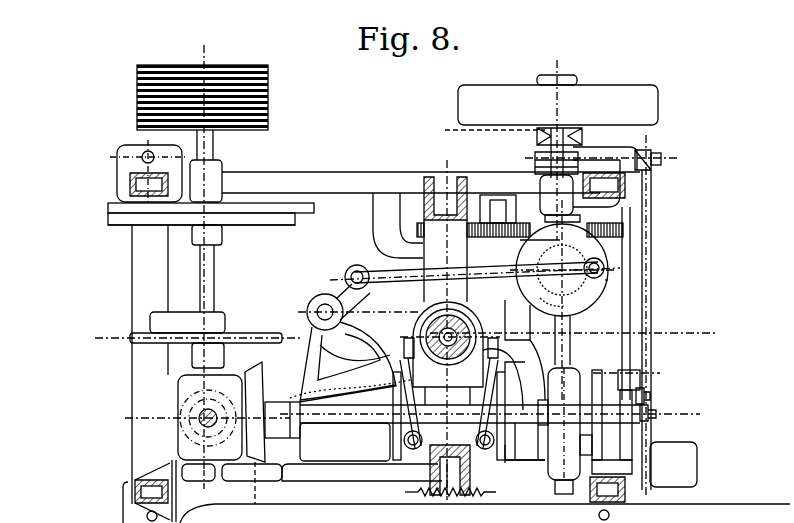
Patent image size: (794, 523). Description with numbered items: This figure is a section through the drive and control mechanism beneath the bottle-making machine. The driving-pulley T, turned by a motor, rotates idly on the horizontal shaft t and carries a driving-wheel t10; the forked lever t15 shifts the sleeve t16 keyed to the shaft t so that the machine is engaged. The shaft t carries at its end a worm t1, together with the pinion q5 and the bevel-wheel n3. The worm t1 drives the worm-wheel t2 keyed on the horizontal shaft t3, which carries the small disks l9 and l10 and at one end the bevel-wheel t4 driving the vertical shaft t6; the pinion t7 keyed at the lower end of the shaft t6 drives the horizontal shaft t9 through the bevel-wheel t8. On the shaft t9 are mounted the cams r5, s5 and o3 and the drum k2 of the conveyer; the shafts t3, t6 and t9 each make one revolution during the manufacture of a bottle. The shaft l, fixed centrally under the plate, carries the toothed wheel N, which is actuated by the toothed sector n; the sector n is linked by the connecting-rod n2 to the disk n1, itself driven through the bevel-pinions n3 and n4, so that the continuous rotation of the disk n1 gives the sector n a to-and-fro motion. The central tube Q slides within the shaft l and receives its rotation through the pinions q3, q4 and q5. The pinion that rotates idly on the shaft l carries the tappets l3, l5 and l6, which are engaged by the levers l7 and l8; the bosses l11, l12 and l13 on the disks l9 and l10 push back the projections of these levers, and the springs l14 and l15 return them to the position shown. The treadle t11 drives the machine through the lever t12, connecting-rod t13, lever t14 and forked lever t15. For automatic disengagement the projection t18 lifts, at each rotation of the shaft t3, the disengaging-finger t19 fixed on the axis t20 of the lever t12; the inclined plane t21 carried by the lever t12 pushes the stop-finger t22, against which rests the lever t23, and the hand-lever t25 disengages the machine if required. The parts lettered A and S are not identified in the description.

The working drum k2 is at (270, 98).
The cam s5 is at (108, 212).
The cam o3 is at (126, 220).
The frame column A is at (150, 364).
The horizontal shaft t9 is at (216, 299).
The cam r5 is at (130, 338).
The bevel-wheel t8 is at (185, 395).
The pinion t7 is at (185, 412).
The vertical shaft t6 is at (200, 425).
The bevel-wheel t4 is at (272, 442).
The pinion q3 is at (398, 240).
The worm t1 is at (445, 330).
The pinion q4 is at (520, 230).
The tappet l5 is at (475, 284).
The toothed sector n is at (355, 343).
The lever l8 is at (392, 362).
The boss l12 is at (347, 392).
The gear S is at (450, 354).
The tappet l6 is at (447, 391).
The toothed wheel N is at (547, 300).
The tappet l3 is at (514, 319).
The central tube Q is at (514, 360).
The bevel-pinion n4 is at (591, 254).
The connecting-rod n2 is at (530, 252).
The disk n1 is at (615, 281).
The bevel-wheel n3 is at (580, 302).
The shaft l is at (407, 399).
The lever l7 is at (510, 370).
The horizontal shaft t3 is at (490, 430).
The disk l10 is at (392, 455).
The spring l15 is at (445, 484).
The spring l14 is at (450, 505).
The driving-pulley T is at (558, 150).
The driving-wheel t10 is at (492, 116).
The sleeve t16 is at (537, 138).
The forked lever t15 is at (533, 163).
The pinion q5 is at (588, 185).
The lever t14 is at (648, 152).
The connecting-rod t13 is at (666, 315).
The horizontal shaft t is at (580, 327).
The stop-finger t22 is at (605, 398).
The inclined plane t21 is at (633, 363).
The lever t23 is at (564, 424).
The worm-wheel t2 is at (555, 418).
The lever t12 is at (566, 474).
The projection t18 is at (606, 454).
The disengaging-finger t19 is at (637, 425).
The hand-lever t25 is at (650, 388).
The axis t20 is at (660, 414).
The treadle t11 is at (673, 464).
The boss l13 is at (525, 462).
The disk l9 is at (529, 442).
The boss l11 is at (515, 378).